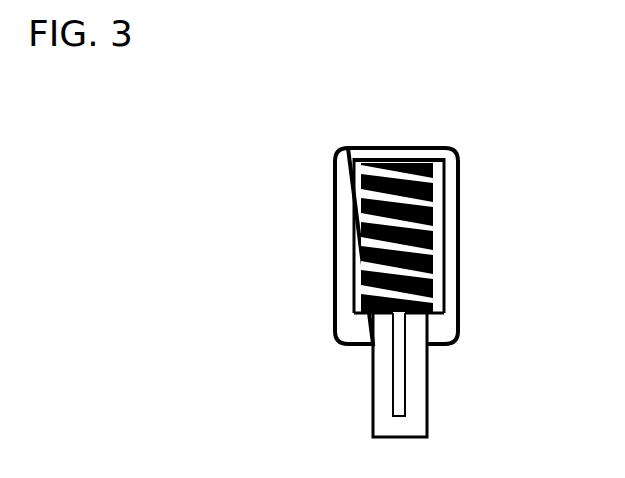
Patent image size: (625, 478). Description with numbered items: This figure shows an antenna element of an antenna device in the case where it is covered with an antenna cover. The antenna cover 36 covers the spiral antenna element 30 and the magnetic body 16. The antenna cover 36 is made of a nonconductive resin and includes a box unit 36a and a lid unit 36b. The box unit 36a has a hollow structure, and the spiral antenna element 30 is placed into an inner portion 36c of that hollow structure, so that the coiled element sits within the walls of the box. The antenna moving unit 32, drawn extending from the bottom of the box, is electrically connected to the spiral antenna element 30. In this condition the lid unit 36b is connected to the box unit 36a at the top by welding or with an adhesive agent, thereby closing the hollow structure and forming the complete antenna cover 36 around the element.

The magnetic body 16 is at (385, 146).
The spiral antenna element 30 is at (440, 216).
The antenna moving unit 32 is at (373, 406).
The antenna cover 36 is at (423, 140).
The box unit 36a is at (432, 333).
The lid unit 36b is at (437, 148).
The inner portion 36c is at (362, 206).